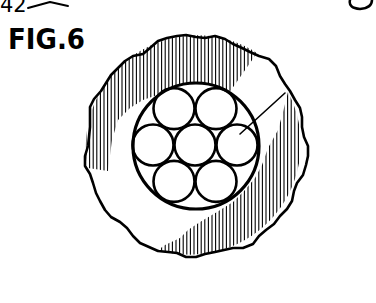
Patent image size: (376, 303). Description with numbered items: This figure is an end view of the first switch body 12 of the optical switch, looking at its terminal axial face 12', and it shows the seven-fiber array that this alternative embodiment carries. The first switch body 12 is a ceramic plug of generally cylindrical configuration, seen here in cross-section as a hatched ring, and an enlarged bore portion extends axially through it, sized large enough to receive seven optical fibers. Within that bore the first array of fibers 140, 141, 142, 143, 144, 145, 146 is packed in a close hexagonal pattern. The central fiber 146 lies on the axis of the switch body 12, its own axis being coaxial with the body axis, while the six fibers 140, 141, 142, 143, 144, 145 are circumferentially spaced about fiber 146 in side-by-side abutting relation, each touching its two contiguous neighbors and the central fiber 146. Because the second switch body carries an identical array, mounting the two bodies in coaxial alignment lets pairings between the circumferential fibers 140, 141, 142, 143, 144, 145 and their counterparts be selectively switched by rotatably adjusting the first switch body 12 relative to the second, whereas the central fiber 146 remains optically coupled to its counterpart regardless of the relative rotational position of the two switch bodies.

The first switch body 12 is at (197, 141).
The terminal axial face 12' is at (177, 146).
The fiber 140 is at (140, 170).
The fiber 141 is at (172, 195).
The fiber 142 is at (223, 187).
The fiber 143 is at (245, 150).
The fiber 144 is at (217, 108).
The fiber 145 is at (171, 106).
The fiber 146 is at (202, 150).